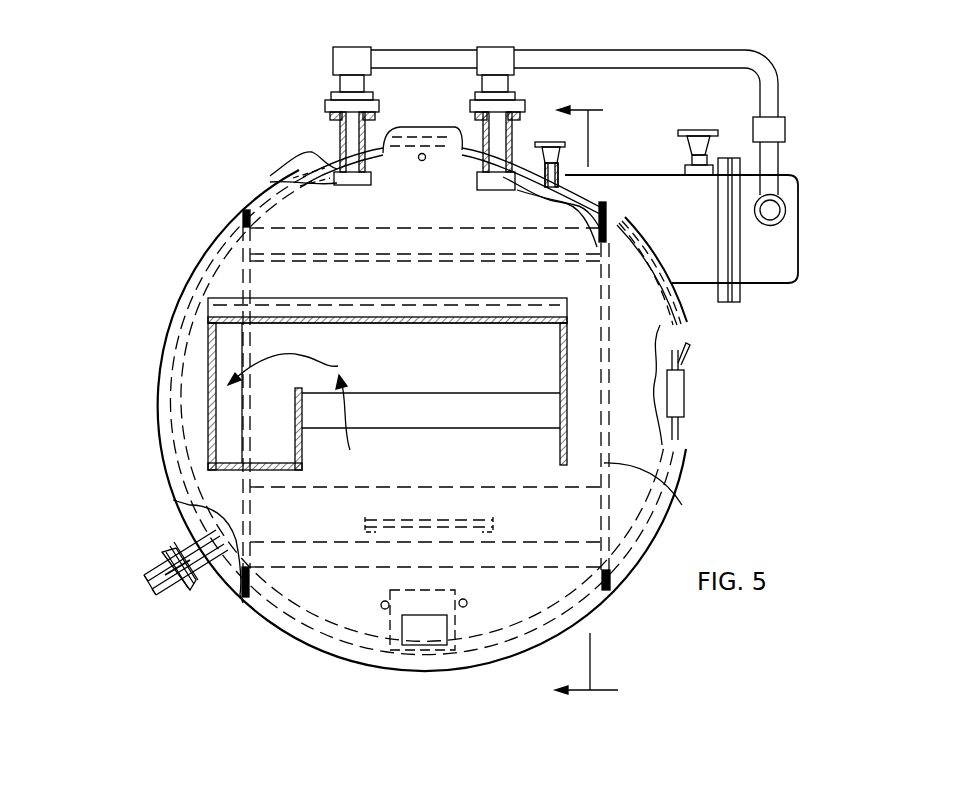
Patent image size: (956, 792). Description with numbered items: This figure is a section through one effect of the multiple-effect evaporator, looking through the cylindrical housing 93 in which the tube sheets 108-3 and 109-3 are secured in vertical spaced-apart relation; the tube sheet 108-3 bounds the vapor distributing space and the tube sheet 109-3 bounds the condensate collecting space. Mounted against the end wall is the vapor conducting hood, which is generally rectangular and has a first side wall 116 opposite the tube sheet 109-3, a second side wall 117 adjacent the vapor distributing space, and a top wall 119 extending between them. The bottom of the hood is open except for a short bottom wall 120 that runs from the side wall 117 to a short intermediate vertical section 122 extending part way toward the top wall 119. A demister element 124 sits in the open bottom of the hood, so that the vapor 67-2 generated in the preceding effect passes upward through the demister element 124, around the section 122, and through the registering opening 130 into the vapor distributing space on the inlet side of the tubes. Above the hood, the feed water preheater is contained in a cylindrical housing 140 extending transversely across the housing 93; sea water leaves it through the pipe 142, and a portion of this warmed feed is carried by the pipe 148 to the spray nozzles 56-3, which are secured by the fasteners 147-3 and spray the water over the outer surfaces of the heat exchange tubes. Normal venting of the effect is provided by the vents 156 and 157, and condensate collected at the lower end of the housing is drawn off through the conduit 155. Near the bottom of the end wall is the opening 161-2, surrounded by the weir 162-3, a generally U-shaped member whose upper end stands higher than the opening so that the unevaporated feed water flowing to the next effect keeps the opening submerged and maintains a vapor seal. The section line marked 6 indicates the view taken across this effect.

The pipe 148 is at (682, 50).
The bolt assembly 147-3 is at (337, 137).
The section line 6 is at (593, 402).
The cylindrical housing 140 is at (652, 175).
The vent 157 is at (697, 134).
The pipe 156 is at (570, 150).
The spray nozzles 56-3 is at (283, 173).
The pipe 142 is at (778, 218).
The top wall 119 is at (352, 309).
The second side wall 117 is at (207, 372).
The vapor 67-2 is at (338, 366).
The demister element 124 is at (455, 397).
The first side wall 116 is at (561, 362).
The intermediate vertical section 122 is at (296, 410).
The bottom wall 120 is at (270, 463).
The opening 130 is at (223, 443).
The cylindrical housing 93 is at (693, 427).
The tube sheet 109-3 is at (676, 490).
The tube sheet 108-3 is at (249, 520).
The conduit 155 is at (176, 598).
The opening 161-2 is at (413, 635).
The weir 162-3 is at (455, 627).